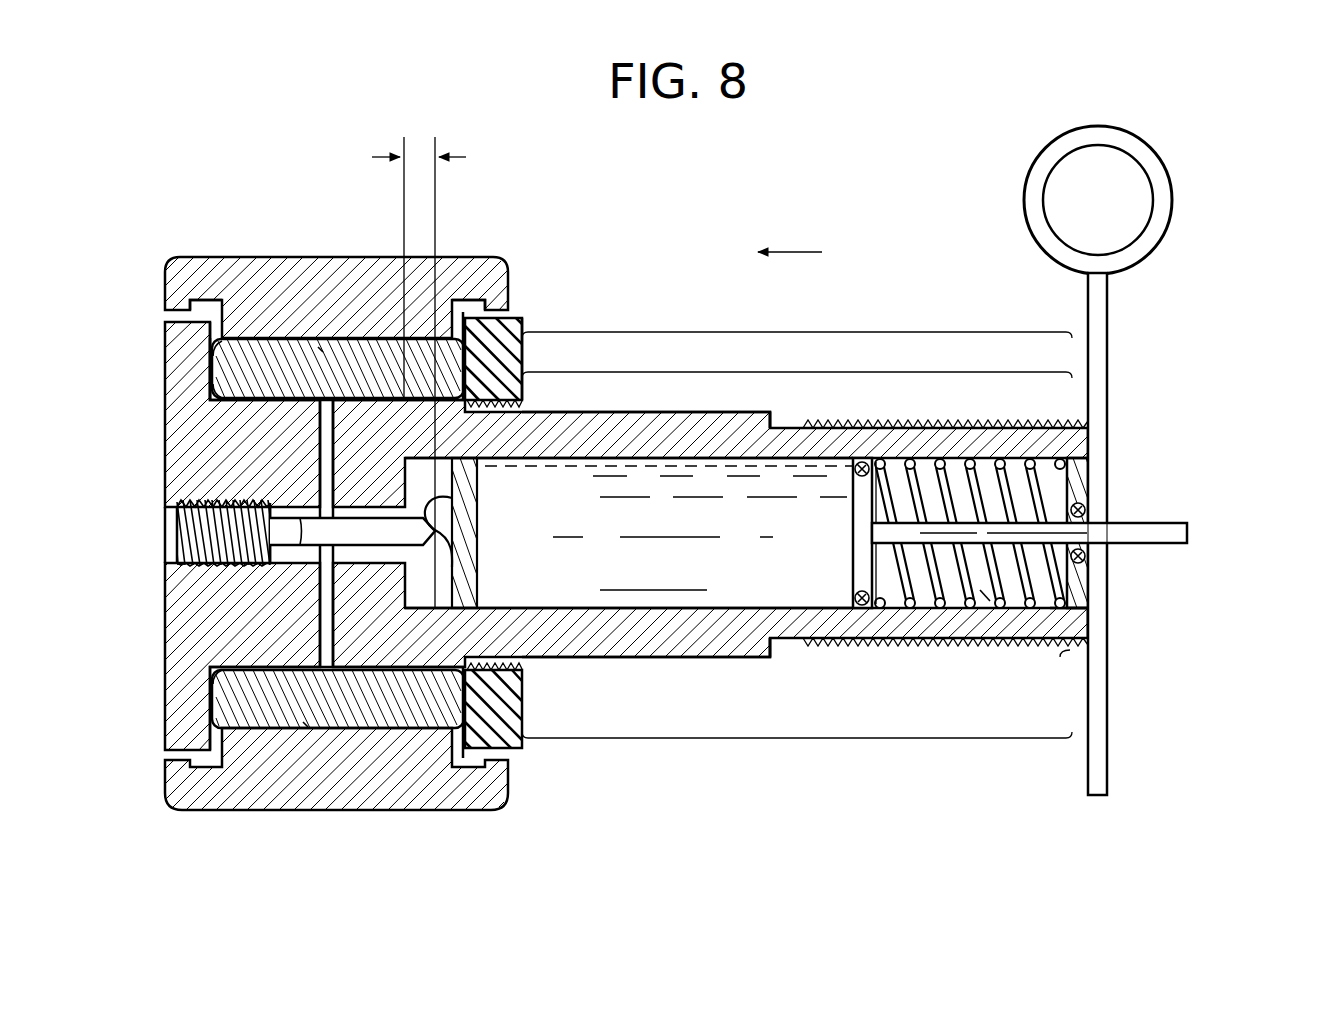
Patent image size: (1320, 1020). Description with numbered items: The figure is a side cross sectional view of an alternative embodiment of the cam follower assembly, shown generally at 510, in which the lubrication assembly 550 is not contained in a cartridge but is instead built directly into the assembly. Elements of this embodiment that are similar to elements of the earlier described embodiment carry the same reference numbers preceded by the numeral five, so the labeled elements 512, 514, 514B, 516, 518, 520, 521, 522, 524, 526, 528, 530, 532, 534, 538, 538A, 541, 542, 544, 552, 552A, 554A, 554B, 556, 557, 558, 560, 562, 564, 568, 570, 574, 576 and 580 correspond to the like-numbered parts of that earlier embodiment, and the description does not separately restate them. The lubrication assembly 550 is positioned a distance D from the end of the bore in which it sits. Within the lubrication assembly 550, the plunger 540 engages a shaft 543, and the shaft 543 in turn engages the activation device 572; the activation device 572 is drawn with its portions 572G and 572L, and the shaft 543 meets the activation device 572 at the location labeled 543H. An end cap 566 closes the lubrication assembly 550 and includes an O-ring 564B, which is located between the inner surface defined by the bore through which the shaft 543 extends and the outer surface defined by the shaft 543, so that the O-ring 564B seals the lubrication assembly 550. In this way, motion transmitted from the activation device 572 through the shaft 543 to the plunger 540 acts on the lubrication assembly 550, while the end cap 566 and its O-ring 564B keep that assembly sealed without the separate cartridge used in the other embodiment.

The roller assembly 510 is at (816, 176).
The housing 512 is at (177, 485).
The roller channel 514 is at (178, 385).
The channel side wall 514B is at (213, 381).
The cylinder body 516 is at (797, 358).
The roller end 518 is at (253, 395).
The cylinder 520 is at (592, 412).
The threads 521 is at (500, 399).
The actuator 522 is at (797, 319).
The end cap 524 is at (220, 274).
The cap outer surface 526 is at (313, 256).
The roller 528 is at (363, 348).
The roller bearing 530 is at (307, 340).
The roller axle 532 is at (323, 347).
The slot 534 is at (318, 650).
The external thread 538 is at (940, 622).
The spring end 538A is at (987, 594).
The plunger 540 is at (860, 571).
The fluid 541 is at (800, 467).
The chamber 542 is at (740, 590).
The shaft 543 is at (888, 537).
The rod hole 543H is at (1108, 527).
The secondary piston 544 is at (470, 600).
The lubrication assembly 550 is at (758, 740).
The retaining nut 552 is at (523, 360).
The nut face 552A is at (523, 330).
The cap flange 554A is at (512, 308).
The cap flange 554B is at (212, 314).
The spring 556 is at (1046, 477).
The cylinder end wall 557 is at (1092, 623).
The lower retaining nut 558 is at (523, 668).
The shoulder 560 is at (672, 412).
The thread end 562 is at (1089, 653).
The piston seal 564 is at (866, 462).
The O-ring 564B is at (1087, 565).
The end cap 566 is at (1088, 487).
The pin 568 is at (452, 522).
The pin shaft 570 is at (300, 565).
The activation device 572 is at (1155, 438).
The grip ring 572G is at (1163, 202).
The pin leg 572L is at (1104, 350).
The screw end 574 is at (208, 572).
The adjustment screw 576 is at (172, 552).
The housing face 580 is at (165, 593).